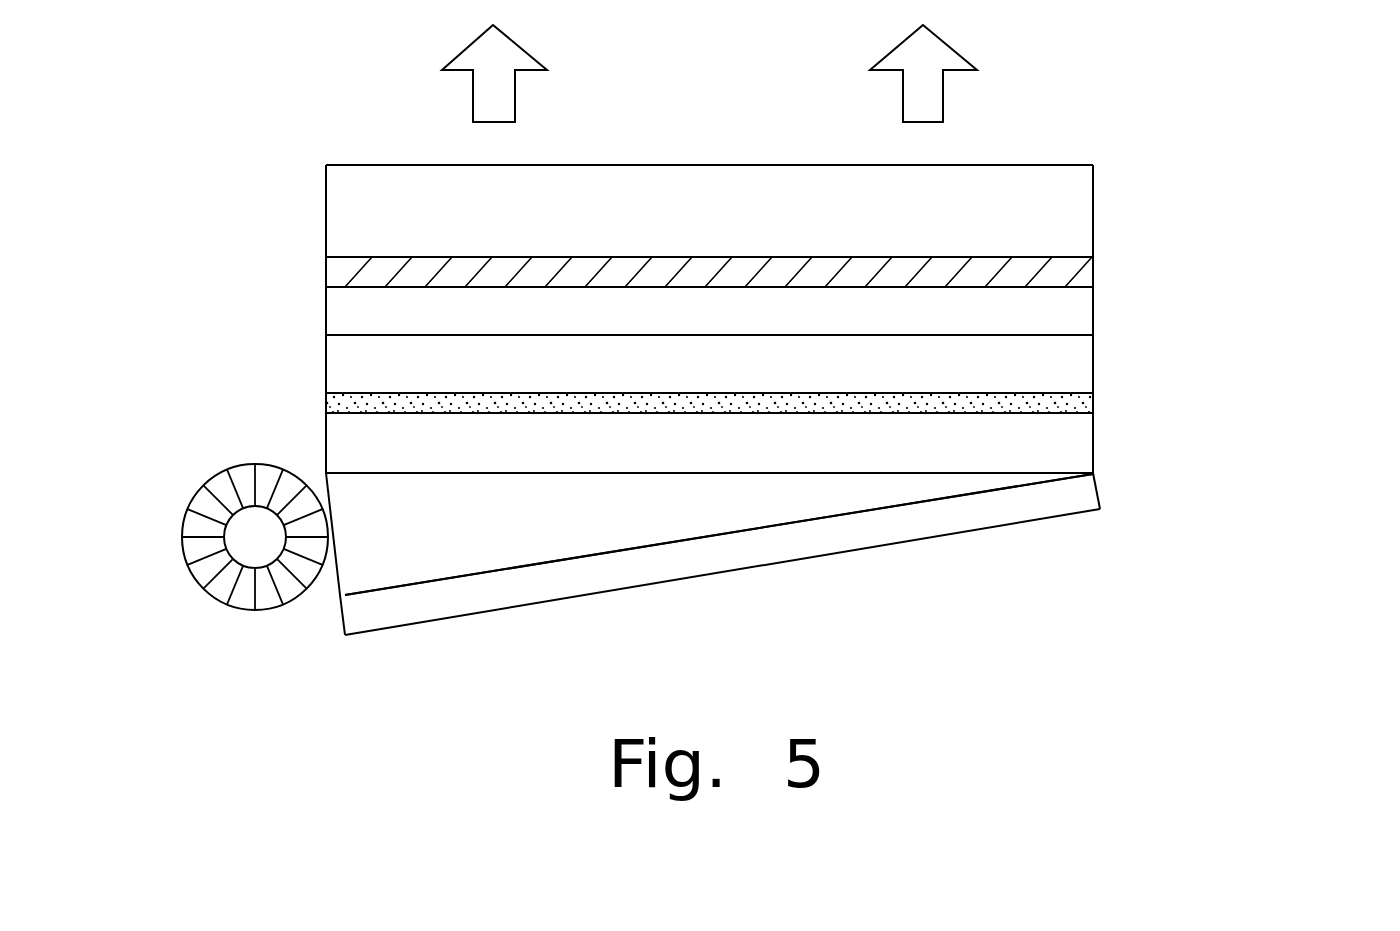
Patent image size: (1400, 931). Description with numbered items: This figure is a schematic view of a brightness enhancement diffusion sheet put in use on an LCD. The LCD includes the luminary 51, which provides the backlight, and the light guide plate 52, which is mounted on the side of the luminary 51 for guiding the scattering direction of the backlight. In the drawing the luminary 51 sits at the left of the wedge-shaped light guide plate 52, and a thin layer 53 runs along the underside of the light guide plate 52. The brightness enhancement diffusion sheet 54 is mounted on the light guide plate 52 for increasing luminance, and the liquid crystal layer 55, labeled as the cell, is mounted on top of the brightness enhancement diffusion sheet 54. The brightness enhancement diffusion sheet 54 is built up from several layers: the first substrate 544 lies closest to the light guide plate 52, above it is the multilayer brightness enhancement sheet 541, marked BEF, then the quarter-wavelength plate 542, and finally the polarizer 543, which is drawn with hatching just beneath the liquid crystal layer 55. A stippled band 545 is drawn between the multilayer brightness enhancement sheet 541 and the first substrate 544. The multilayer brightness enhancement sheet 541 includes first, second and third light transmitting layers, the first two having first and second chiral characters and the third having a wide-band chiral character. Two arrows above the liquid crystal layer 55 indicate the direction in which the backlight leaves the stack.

The luminary 51 is at (200, 522).
The light guide plate 52 is at (393, 503).
The reflective sheet 53 is at (1065, 499).
The brightness enhancement diffusion sheet 54 is at (854, 369).
The multilayer brightness enhancement sheet 541 is at (1070, 360).
The ¼-wavelength plate 542 is at (1070, 313).
The polarizer 543 is at (1070, 263).
The first substrate 544 is at (818, 447).
The light diffusing layer 545 is at (1070, 398).
The liquid crystal layer 55 is at (1070, 210).